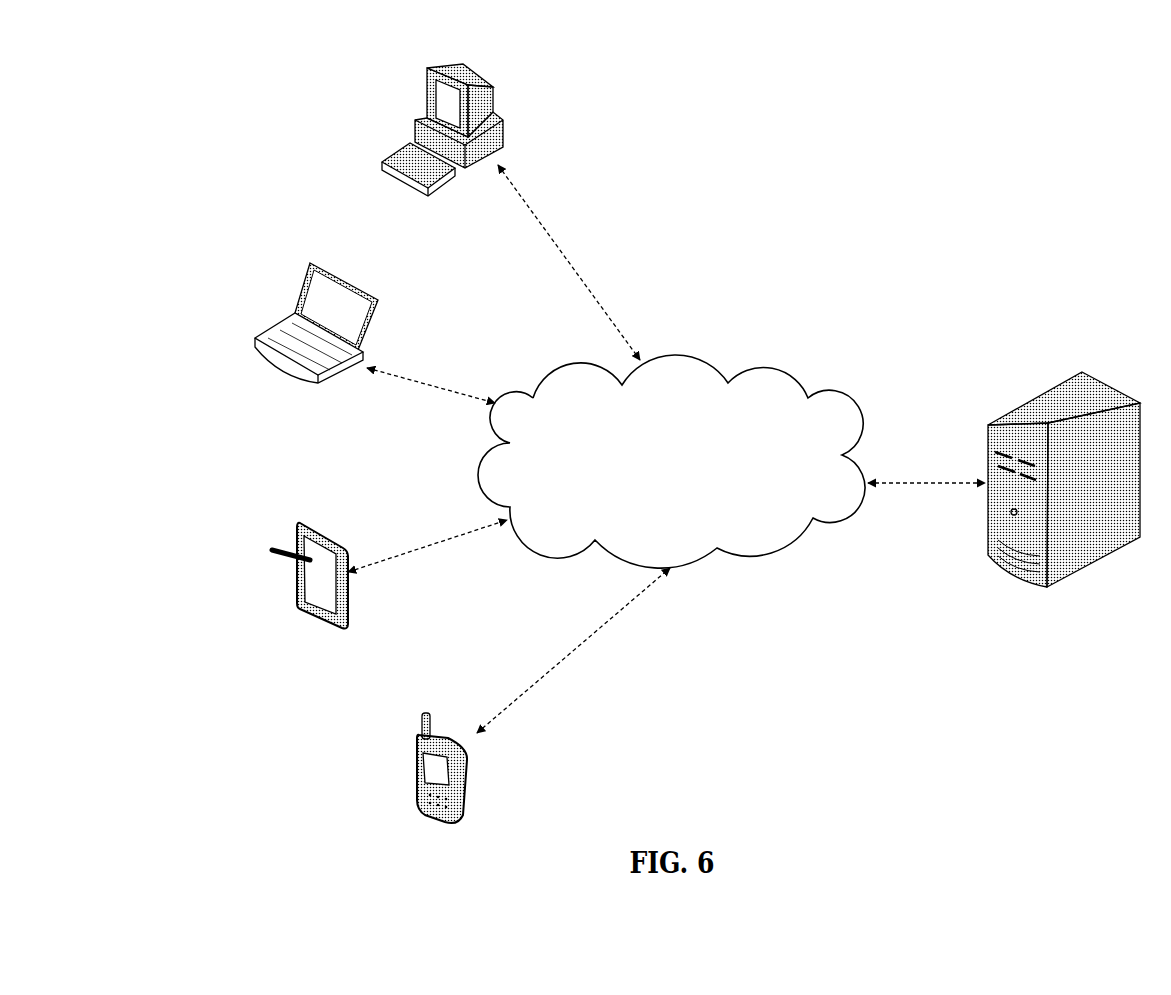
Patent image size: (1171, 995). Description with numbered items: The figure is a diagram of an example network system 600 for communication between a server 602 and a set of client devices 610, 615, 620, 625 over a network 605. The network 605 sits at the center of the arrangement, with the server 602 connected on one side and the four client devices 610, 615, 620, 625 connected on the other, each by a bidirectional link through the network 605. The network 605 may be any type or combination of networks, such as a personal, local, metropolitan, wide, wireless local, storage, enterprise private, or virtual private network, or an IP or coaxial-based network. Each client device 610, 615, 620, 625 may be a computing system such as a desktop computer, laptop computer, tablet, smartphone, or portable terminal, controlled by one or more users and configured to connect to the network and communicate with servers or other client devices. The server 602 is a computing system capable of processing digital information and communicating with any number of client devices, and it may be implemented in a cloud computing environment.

The network system 600 is at (985, 208).
The server 602 is at (1081, 371).
The network 605 is at (708, 358).
The client device 610 is at (493, 80).
The client device 615 is at (290, 288).
The client device 620 is at (287, 577).
The client device 625 is at (413, 770).